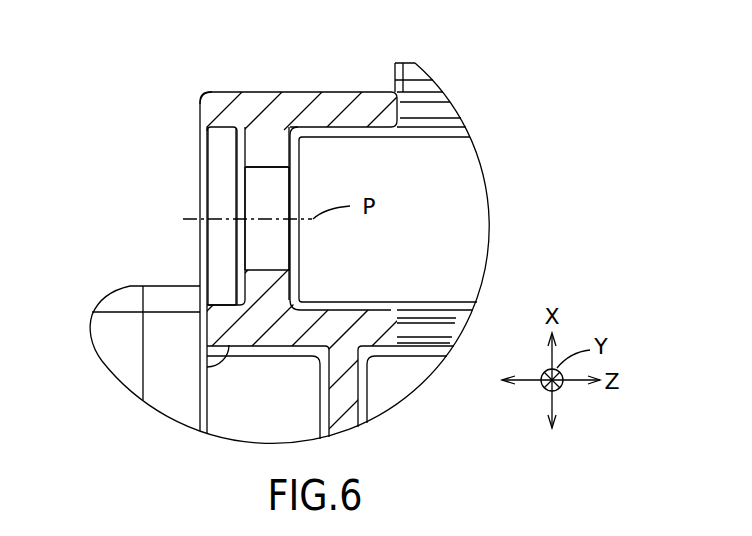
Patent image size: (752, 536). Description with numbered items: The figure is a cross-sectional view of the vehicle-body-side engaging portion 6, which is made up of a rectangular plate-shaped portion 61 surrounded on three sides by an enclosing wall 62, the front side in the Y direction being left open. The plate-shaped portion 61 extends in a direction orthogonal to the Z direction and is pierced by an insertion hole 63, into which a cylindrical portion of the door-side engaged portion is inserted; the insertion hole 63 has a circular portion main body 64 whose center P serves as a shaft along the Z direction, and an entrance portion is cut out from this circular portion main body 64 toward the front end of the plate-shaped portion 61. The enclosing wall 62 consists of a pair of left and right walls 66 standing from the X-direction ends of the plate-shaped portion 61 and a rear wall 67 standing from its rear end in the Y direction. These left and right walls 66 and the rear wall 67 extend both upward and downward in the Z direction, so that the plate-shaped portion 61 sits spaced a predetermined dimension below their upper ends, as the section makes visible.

The vehicle-body-side engaging portion 6 is at (285, 229).
The plate-shaped portion 61 is at (257, 148).
The enclosing wall 62 is at (190, 106).
The insertion hole 63 is at (275, 180).
The circular portion main body 64 is at (257, 168).
The left and right walls 66 is at (223, 103).
The rear wall 67 is at (220, 247).